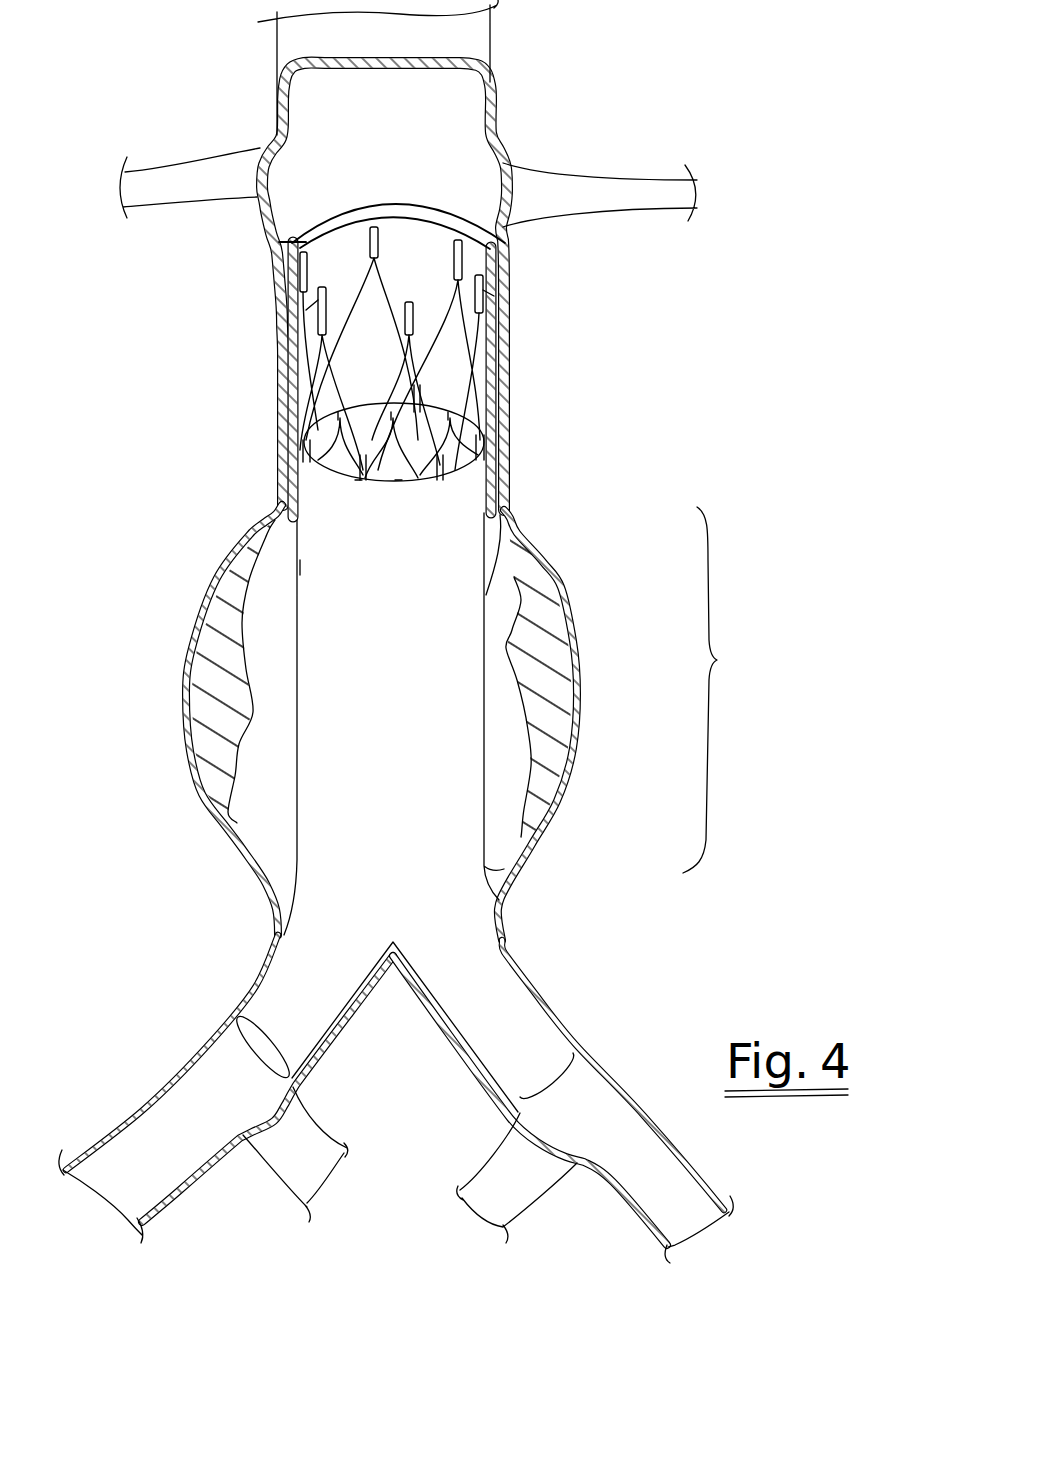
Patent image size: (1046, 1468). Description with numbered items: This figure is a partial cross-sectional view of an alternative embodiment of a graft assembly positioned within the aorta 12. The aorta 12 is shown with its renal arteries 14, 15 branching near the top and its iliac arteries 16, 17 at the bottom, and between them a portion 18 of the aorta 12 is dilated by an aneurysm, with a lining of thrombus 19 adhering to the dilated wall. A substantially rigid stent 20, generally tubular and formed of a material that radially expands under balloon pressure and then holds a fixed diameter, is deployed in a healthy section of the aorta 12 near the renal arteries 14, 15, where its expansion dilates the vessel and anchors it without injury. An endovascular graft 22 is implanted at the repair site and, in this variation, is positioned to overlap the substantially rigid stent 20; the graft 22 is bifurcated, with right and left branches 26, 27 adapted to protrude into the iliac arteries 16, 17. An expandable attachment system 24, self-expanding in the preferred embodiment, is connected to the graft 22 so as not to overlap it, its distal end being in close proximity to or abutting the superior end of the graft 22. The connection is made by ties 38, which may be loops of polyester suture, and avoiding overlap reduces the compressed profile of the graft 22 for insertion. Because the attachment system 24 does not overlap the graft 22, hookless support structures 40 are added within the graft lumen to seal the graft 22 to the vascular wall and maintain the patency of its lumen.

The aorta 12 is at (480, 35).
The renal artery 14 is at (611, 179).
The renal artery 15 is at (182, 160).
The iliac artery 16 is at (562, 1010).
The iliac artery 17 is at (240, 985).
The portion of the aorta dilated by an aneurysm 18 is at (731, 690).
The lining of thrombus 19 is at (556, 658).
The substantially rigid stent 20 is at (484, 597).
The endovascular graft 22 is at (490, 876).
The attachment system 24 is at (380, 295).
The right branch 26 is at (557, 1080).
The left branch 27 is at (262, 1050).
The ties 38 is at (360, 480).
The support structures 40 is at (398, 480).